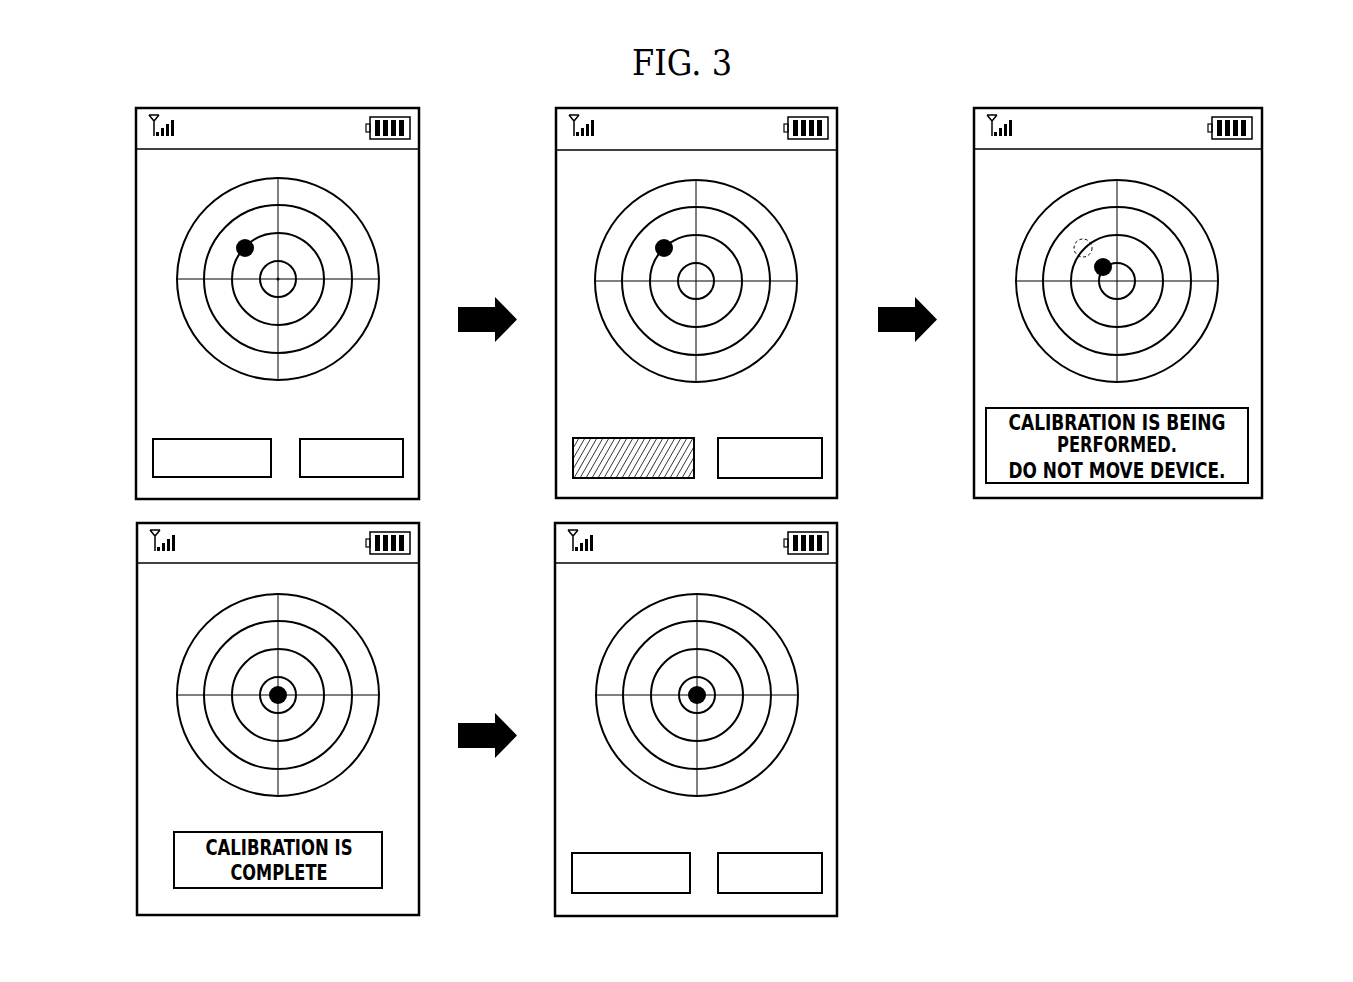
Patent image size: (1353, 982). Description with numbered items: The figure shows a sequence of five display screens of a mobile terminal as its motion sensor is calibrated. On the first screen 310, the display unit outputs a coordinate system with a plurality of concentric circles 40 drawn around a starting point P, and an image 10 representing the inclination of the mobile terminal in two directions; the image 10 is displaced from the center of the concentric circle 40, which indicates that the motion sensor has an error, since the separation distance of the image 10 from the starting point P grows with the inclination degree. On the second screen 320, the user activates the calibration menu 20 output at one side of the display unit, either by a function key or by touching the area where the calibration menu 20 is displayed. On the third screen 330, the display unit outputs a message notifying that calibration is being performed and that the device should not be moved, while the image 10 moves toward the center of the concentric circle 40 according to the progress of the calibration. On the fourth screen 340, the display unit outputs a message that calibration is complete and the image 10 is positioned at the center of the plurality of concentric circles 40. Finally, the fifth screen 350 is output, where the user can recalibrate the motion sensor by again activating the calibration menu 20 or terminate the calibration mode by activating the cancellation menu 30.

The image 10 is at (236, 243).
The calibration menu 20 is at (153, 456).
The cancellation menu 30 is at (403, 456).
The concentric circle 40 is at (265, 263).
The starting point P is at (280, 279).
The first screen 310 is at (420, 168).
The second screen 320 is at (838, 214).
The third screen 330 is at (1263, 216).
The fourth screen 340 is at (420, 627).
The fifth screen 350 is at (838, 628).